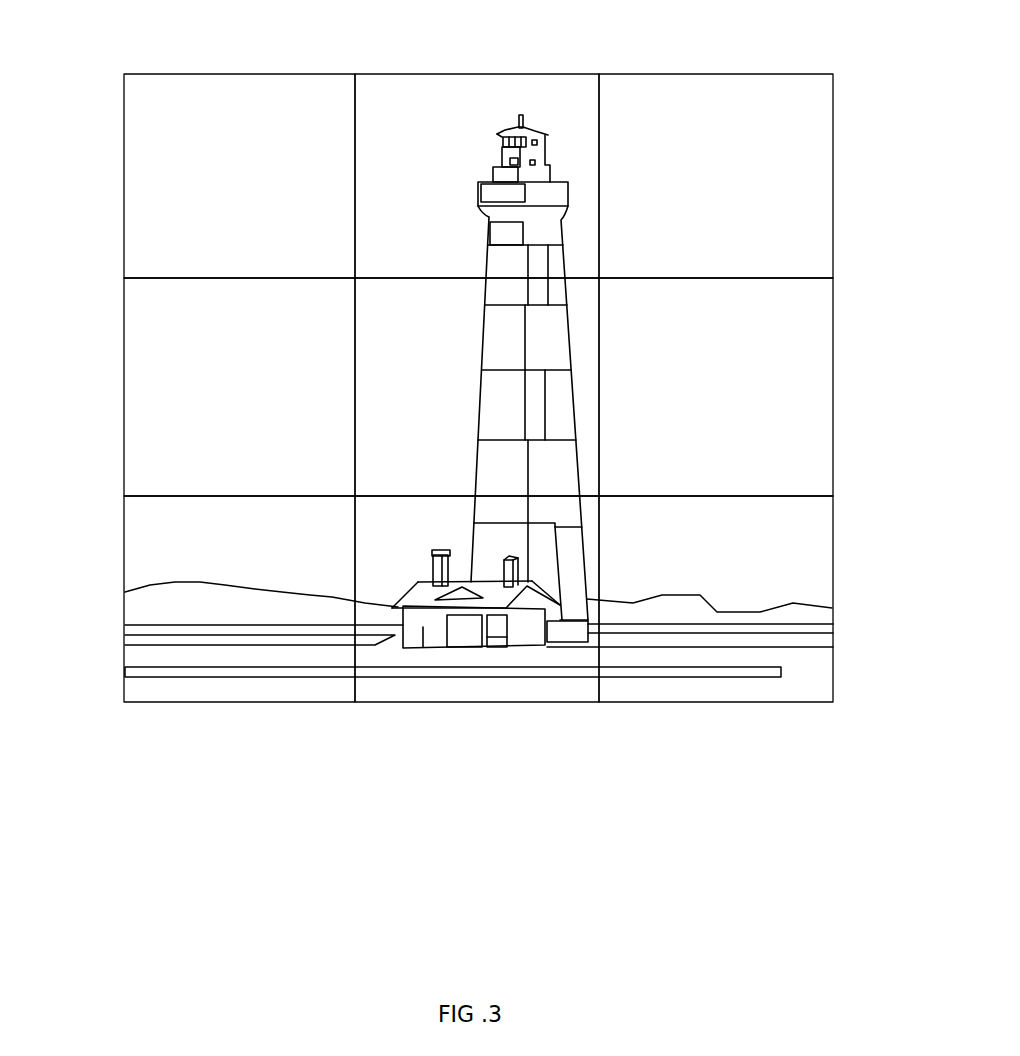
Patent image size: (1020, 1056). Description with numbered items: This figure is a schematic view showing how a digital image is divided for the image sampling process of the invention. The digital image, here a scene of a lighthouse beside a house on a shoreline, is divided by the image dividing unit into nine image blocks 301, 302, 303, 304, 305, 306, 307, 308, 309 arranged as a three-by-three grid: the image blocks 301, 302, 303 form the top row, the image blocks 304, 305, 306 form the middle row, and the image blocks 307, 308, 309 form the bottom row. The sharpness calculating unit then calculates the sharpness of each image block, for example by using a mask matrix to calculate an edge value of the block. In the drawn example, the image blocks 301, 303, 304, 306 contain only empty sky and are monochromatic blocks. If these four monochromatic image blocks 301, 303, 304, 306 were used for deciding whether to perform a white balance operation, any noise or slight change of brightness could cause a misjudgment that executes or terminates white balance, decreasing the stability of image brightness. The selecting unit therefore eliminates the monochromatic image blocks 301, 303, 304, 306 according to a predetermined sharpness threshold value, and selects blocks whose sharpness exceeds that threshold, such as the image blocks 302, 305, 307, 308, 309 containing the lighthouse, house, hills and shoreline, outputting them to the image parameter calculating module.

The image block 301 is at (243, 95).
The image block 302 is at (483, 95).
The image block 303 is at (722, 95).
The image block 304 is at (137, 372).
The image block 305 is at (370, 390).
The image block 306 is at (823, 323).
The image block 307 is at (260, 688).
The image block 308 is at (467, 687).
The image block 309 is at (703, 687).